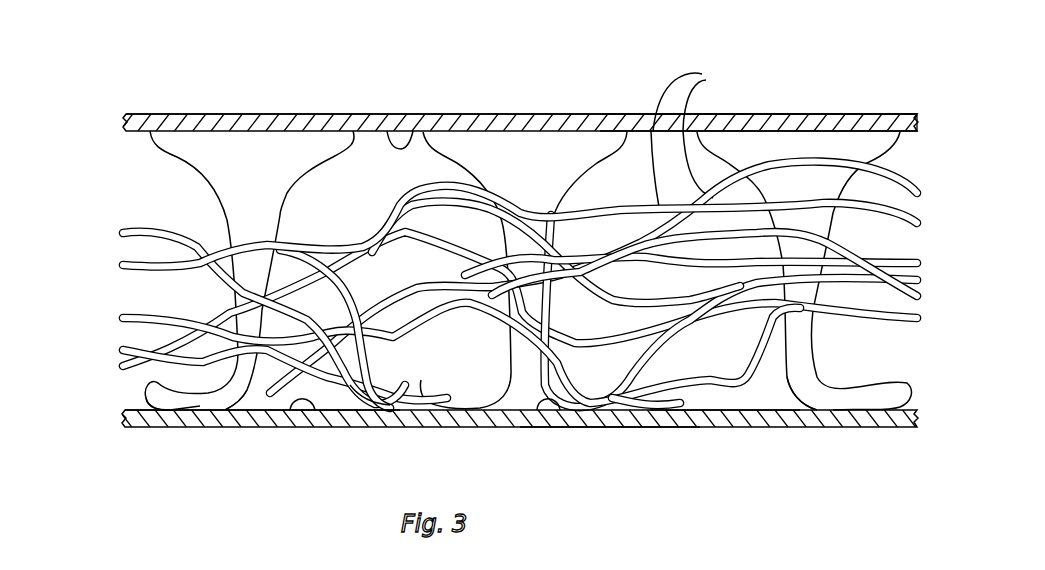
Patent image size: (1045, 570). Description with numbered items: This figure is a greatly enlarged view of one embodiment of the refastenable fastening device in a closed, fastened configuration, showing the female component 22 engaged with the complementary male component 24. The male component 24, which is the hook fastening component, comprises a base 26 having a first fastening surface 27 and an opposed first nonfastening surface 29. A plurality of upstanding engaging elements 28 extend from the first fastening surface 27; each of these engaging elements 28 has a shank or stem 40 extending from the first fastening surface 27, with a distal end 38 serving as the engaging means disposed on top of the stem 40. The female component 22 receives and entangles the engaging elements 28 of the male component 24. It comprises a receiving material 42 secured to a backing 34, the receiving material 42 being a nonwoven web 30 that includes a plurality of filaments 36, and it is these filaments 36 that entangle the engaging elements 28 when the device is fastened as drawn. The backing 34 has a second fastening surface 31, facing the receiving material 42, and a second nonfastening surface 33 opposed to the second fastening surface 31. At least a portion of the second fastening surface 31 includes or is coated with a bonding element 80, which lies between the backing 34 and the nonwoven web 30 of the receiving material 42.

The composite web 22 is at (283, 440).
The top layer 24 is at (363, 95).
The top film 26 is at (815, 113).
The fiber anchor point 27 is at (410, 131).
The bond points 28 is at (245, 393).
The upper surface 29 is at (235, 113).
The fibers 30 is at (406, 378).
The bottom layer 31 is at (302, 395).
The bottom film 33 is at (690, 428).
The lower surface 34 is at (594, 421).
The fibers extending through film 36 is at (702, 74).
The foot of pillar 38 is at (200, 400).
The pillar 40 is at (218, 203).
The loose fiber ends 42 is at (112, 230).
The fiber loop 80 is at (543, 410).